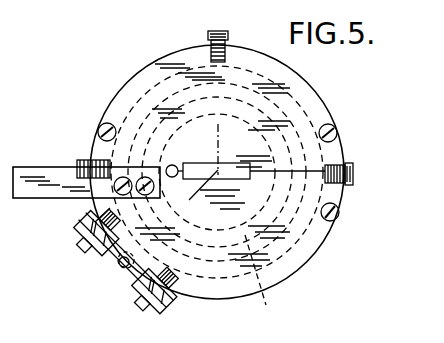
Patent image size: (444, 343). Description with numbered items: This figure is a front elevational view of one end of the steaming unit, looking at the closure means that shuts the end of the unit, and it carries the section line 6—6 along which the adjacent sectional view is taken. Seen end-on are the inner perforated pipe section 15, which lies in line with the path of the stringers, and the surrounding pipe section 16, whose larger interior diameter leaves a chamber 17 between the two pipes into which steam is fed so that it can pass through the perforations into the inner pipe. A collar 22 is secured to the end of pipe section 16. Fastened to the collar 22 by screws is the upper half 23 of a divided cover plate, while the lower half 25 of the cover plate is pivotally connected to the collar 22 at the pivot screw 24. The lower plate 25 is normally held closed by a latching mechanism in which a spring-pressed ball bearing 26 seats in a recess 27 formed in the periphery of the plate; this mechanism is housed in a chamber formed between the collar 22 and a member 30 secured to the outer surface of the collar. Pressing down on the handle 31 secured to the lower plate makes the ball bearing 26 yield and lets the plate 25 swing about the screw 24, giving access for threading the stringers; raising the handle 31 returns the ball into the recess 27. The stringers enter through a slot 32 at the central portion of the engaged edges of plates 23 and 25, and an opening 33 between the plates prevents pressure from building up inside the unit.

The section line 6— 6 is at (250, 17).
The inner perforated pipe section 15 is at (262, 277).
The pipe section 16 is at (286, 120).
The chamber 17 is at (286, 147).
The collar 22 is at (332, 154).
The upper half of divided cover plate 23 is at (138, 76).
The pivot screw 24 is at (337, 214).
The lower half of cover plate 25 is at (295, 268).
The ball bearing 26 is at (128, 266).
The recess 27 is at (120, 262).
The member 30 is at (163, 300).
The handle 31 is at (45, 167).
The slot 32 is at (236, 165).
The opening 33 is at (175, 164).